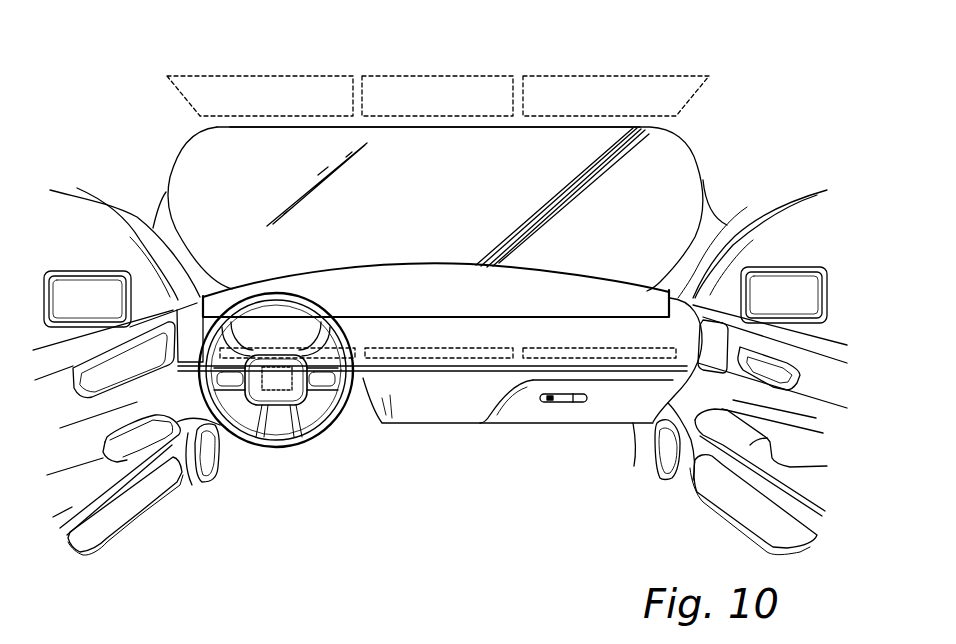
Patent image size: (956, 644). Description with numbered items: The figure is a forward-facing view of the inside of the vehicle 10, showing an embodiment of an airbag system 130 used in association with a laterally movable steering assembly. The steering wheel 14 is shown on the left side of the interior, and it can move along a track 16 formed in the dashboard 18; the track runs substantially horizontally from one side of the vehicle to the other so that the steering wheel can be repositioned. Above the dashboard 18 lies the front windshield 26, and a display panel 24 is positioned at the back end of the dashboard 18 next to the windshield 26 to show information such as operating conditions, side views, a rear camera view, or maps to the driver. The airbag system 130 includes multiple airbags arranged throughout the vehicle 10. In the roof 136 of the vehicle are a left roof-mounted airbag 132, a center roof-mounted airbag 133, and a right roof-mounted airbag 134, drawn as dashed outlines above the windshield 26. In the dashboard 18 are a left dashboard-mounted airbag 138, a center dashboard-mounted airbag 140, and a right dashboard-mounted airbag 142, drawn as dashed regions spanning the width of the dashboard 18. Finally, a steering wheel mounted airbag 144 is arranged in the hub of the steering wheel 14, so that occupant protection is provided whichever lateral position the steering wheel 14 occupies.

The vehicle 10 is at (320, 515).
The steering wheel 14 is at (250, 445).
The track 16 is at (488, 372).
The dashboard 18 is at (177, 312).
The display panel 24 is at (503, 282).
The front windshield 26 is at (433, 191).
The airbag system 130 is at (546, 425).
The left roof-mounted airbag 132 is at (193, 97).
The center roof-mounted airbag 133 is at (486, 97).
The right roof-mounted airbag 134 is at (661, 95).
The roof 136 is at (400, 128).
The left dashboard-mounted airbag 138 is at (238, 352).
The center dashboard-mounted airbag 140 is at (390, 350).
The right dashboard-mounted airbag 142 is at (566, 353).
The steering wheel mounted airbag 144 is at (287, 378).